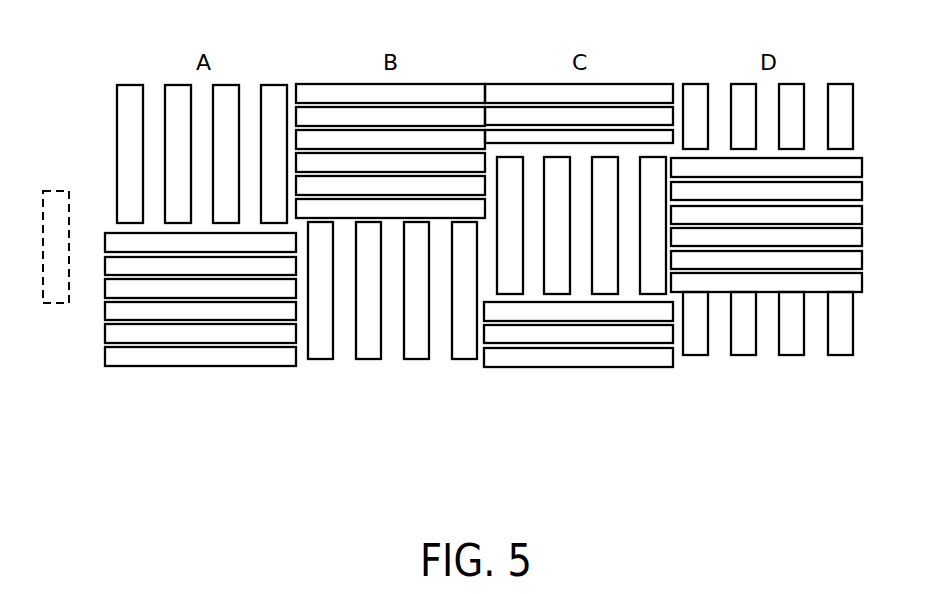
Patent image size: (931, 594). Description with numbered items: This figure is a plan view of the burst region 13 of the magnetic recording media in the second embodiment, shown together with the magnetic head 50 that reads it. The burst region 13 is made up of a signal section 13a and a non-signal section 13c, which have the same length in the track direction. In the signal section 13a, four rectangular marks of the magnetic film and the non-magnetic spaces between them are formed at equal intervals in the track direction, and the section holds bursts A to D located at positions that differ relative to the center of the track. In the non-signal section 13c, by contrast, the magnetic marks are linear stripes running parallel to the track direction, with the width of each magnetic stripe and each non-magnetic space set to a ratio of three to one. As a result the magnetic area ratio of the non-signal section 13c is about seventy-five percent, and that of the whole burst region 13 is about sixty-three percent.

The burst region 13 is at (483, 294).
The signal section 13a is at (583, 278).
The non-signal section 13c is at (766, 276).
The magnetic head 50 is at (58, 190).